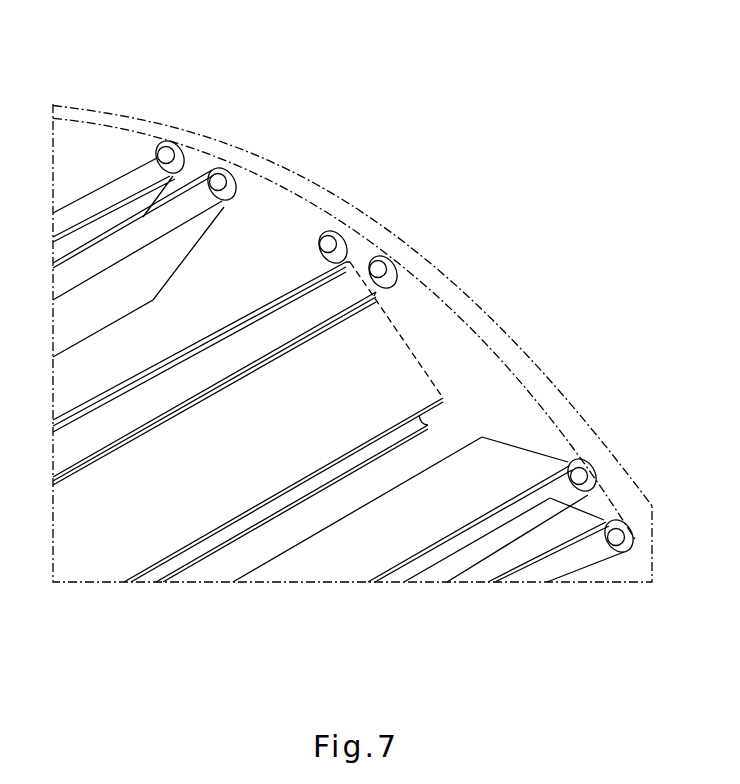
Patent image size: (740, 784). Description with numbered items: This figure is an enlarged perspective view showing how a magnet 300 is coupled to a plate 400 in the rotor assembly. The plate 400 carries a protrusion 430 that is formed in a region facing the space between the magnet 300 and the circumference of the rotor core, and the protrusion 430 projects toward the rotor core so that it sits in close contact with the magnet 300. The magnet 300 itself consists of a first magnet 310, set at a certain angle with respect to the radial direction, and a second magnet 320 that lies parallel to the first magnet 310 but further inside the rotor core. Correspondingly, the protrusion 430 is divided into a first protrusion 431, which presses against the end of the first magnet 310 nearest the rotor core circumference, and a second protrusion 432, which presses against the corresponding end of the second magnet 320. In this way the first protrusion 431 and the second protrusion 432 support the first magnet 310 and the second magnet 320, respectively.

The plate 400 is at (79, 100).
The protrusion 430 is at (235, 265).
The first protrusion 431 is at (378, 270).
The second protrusion 432 is at (328, 244).
The magnet 300 is at (377, 420).
The first magnet 310 is at (387, 355).
The second magnet 320 is at (300, 317).